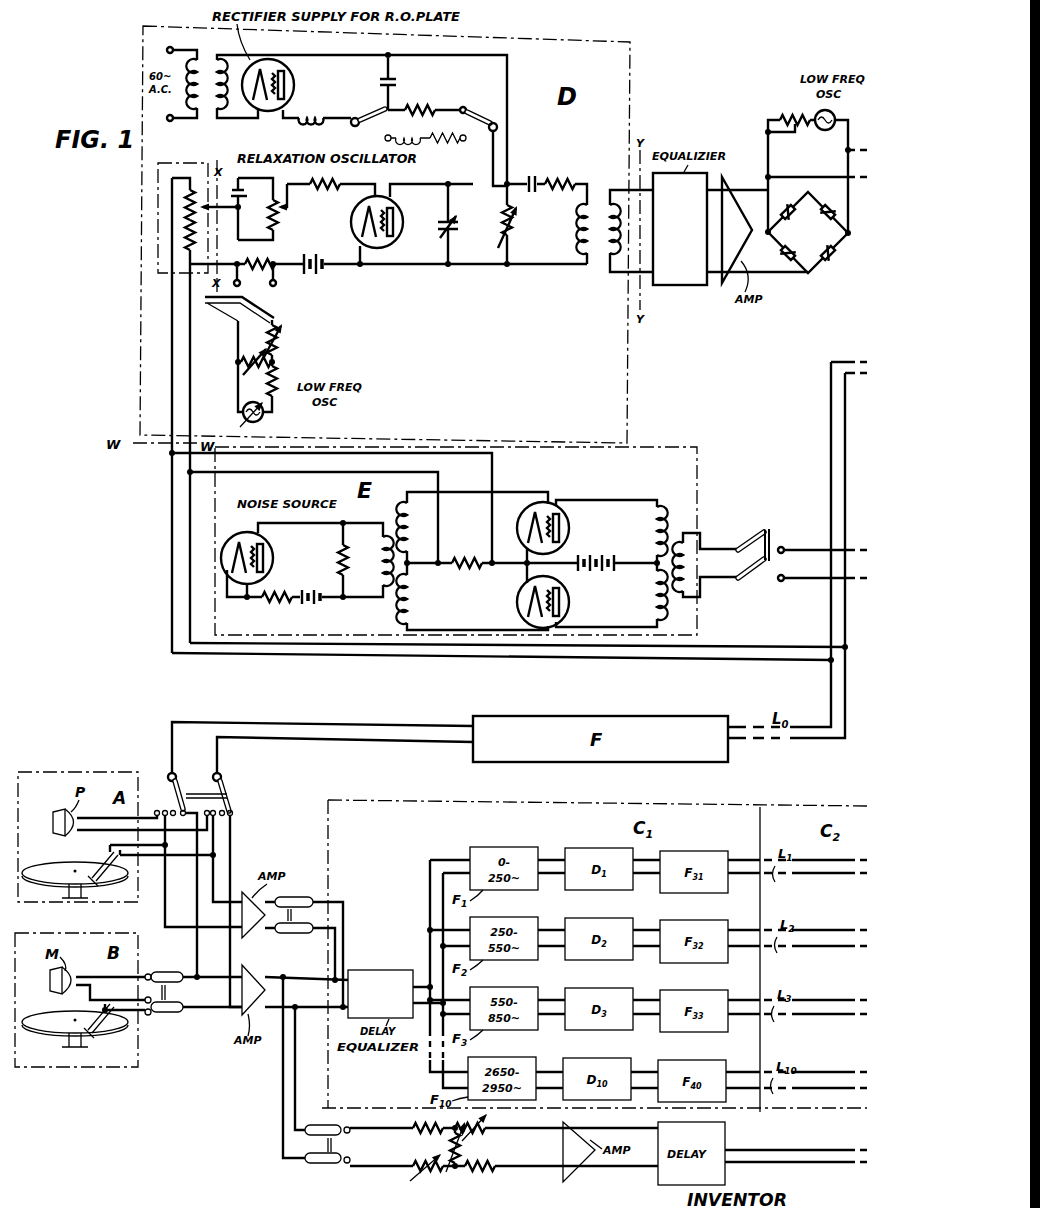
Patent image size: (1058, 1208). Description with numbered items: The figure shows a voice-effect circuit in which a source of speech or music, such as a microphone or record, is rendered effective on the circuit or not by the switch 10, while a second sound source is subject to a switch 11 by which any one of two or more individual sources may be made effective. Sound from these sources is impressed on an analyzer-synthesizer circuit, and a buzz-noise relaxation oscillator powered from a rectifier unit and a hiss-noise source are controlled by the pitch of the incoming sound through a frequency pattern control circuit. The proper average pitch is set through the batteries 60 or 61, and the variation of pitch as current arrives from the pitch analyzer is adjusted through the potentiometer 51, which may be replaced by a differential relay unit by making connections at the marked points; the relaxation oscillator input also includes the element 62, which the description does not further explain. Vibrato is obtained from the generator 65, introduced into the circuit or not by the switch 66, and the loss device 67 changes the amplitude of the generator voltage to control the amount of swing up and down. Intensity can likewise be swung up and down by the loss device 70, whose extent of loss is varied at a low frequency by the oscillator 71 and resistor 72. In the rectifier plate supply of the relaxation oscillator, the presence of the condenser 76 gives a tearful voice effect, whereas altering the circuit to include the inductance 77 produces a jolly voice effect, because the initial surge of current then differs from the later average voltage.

The switch 10 is at (222, 791).
The switch 11 is at (171, 1001).
The potentiometer 51 is at (184, 214).
The battery 60 is at (237, 180).
The battery 61 is at (317, 275).
The potentiometer resistor 62 is at (280, 238).
The generator 65 is at (266, 411).
The switch 66 is at (254, 307).
The loss device 67 is at (278, 361).
The loss device 70 is at (811, 258).
The oscillator 71 is at (830, 130).
The resistor 72 is at (780, 115).
The condenser 76 is at (374, 84).
The inductance 77 is at (423, 143).